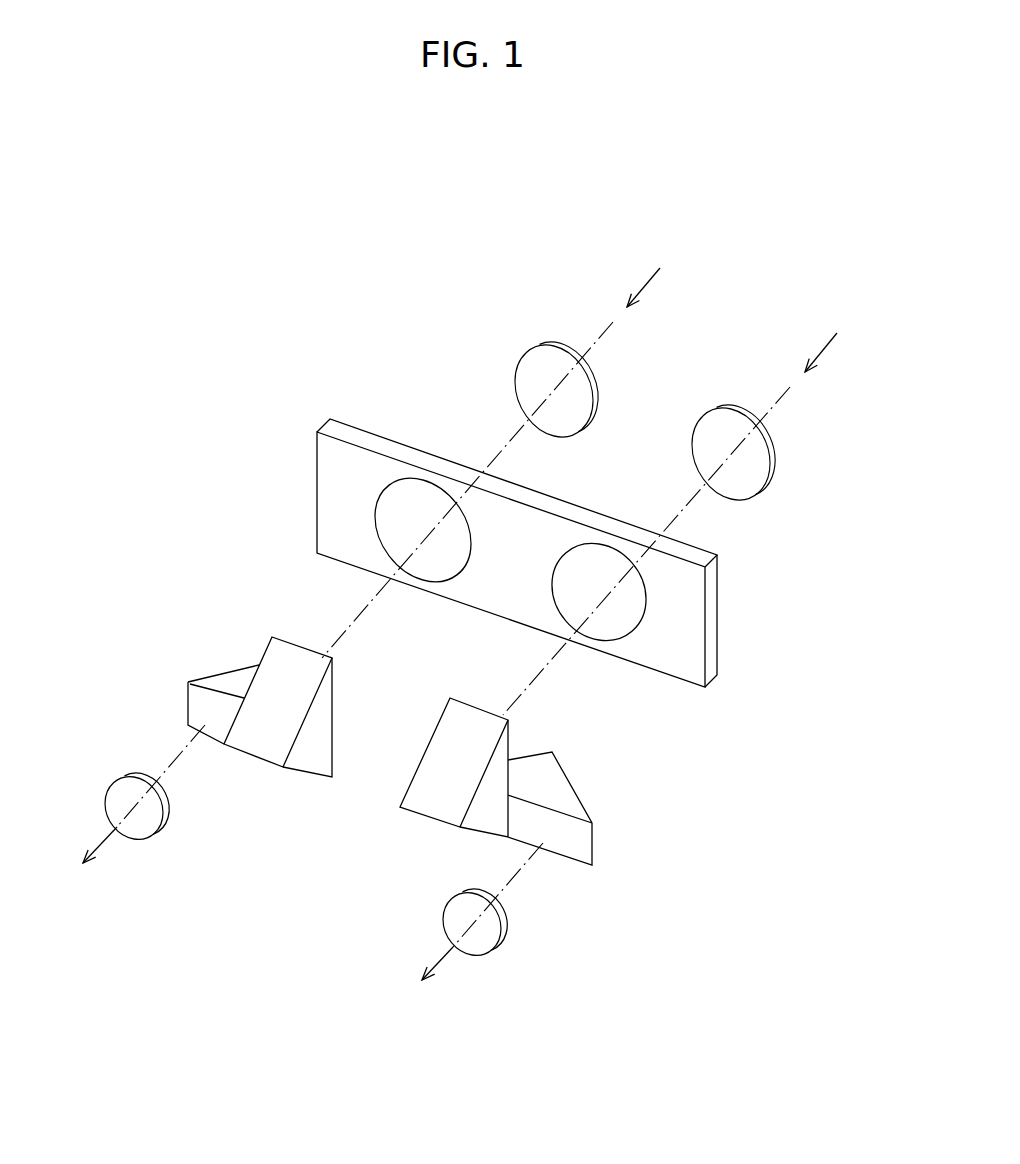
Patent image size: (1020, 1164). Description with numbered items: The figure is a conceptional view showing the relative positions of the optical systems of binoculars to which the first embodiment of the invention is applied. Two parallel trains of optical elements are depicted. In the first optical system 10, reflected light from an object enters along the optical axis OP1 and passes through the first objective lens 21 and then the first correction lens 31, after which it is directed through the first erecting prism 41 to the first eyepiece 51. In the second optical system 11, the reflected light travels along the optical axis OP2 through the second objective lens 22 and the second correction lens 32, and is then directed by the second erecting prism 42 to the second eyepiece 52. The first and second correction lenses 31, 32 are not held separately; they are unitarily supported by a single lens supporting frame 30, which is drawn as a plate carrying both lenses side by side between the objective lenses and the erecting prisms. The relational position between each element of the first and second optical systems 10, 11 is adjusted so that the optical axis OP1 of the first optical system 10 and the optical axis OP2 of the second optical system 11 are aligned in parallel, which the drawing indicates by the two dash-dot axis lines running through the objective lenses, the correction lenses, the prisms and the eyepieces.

The first optical system 10 is at (543, 307).
The second optical system 11 is at (770, 565).
The first objective lens 21 is at (513, 380).
The second objective lens 22 is at (777, 463).
The lens supporting frame 30 is at (473, 580).
The first correction lens 31 is at (388, 513).
The second correction lens 32 is at (620, 622).
The first erecting prism 41 is at (223, 665).
The second erecting prism 42 is at (615, 850).
The first eyepiece 51 is at (113, 783).
The second eyepiece 52 is at (500, 947).
The optical axis of the first optical system OP1 is at (598, 347).
The optical axis of the second optical system OP2 is at (777, 405).